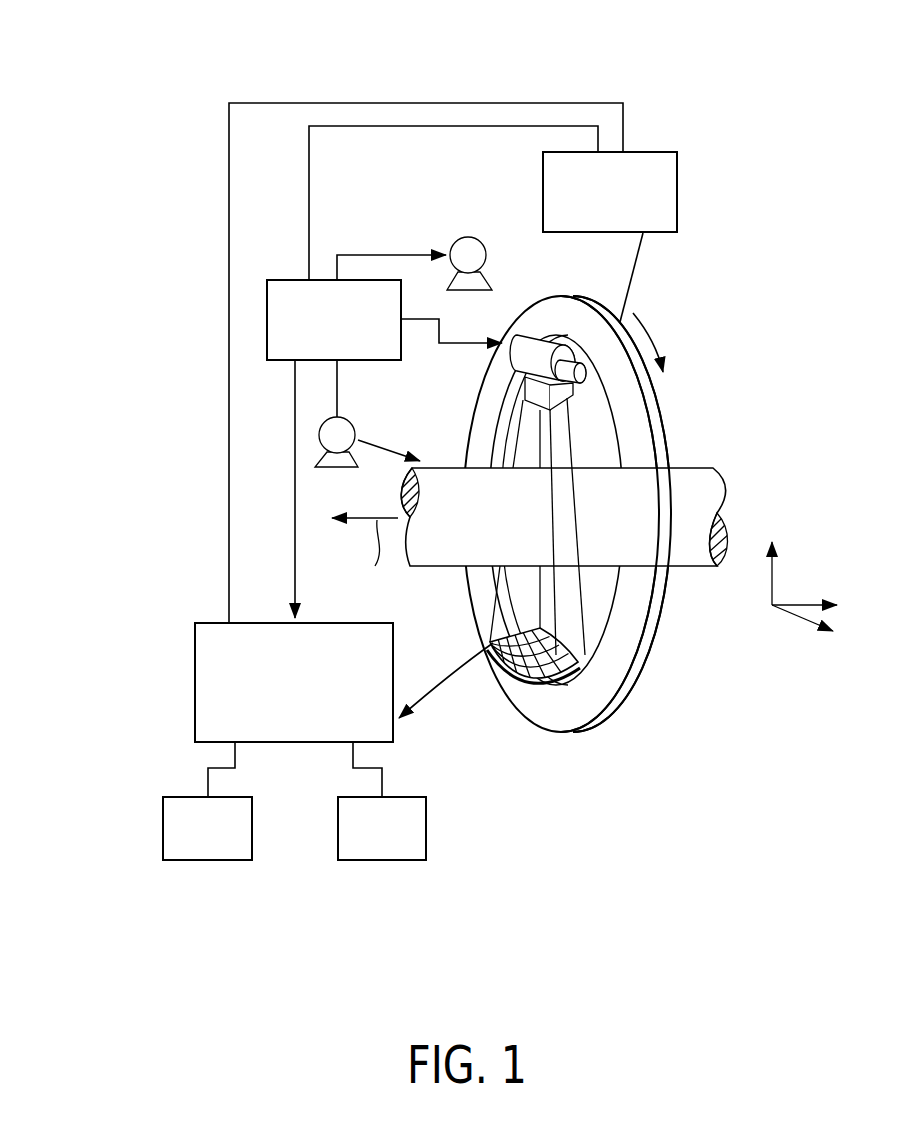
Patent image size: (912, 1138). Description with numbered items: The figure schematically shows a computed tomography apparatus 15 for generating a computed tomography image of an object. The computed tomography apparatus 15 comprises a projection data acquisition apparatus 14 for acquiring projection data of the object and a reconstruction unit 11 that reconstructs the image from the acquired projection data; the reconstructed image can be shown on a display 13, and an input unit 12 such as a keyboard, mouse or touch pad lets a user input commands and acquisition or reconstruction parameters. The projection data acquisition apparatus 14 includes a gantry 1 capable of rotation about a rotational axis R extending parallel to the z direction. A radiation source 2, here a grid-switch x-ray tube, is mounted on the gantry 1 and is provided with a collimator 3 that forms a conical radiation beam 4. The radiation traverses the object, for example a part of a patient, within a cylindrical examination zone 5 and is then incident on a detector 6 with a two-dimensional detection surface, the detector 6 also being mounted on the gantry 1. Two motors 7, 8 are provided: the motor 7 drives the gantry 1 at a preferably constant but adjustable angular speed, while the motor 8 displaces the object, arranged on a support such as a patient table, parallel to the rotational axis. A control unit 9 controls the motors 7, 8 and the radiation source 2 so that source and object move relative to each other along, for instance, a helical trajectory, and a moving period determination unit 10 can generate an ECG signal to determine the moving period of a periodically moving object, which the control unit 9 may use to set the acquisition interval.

The gantry 1 is at (617, 662).
The radiation source 2 is at (537, 342).
The collimator 3 is at (563, 397).
The radiation beam 4 is at (560, 613).
The examination zone 5 is at (441, 468).
The detector 6 is at (527, 687).
The motor 7 is at (478, 238).
The motor 8 is at (352, 424).
The control unit 9 is at (283, 280).
The moving period determination unit 10 is at (677, 188).
The reconstruction unit 11 is at (195, 660).
The input unit 12 is at (163, 828).
The display 13 is at (426, 828).
The projection data acquisition apparatus 14 is at (437, 438).
The computed tomography apparatus 15 is at (262, 741).